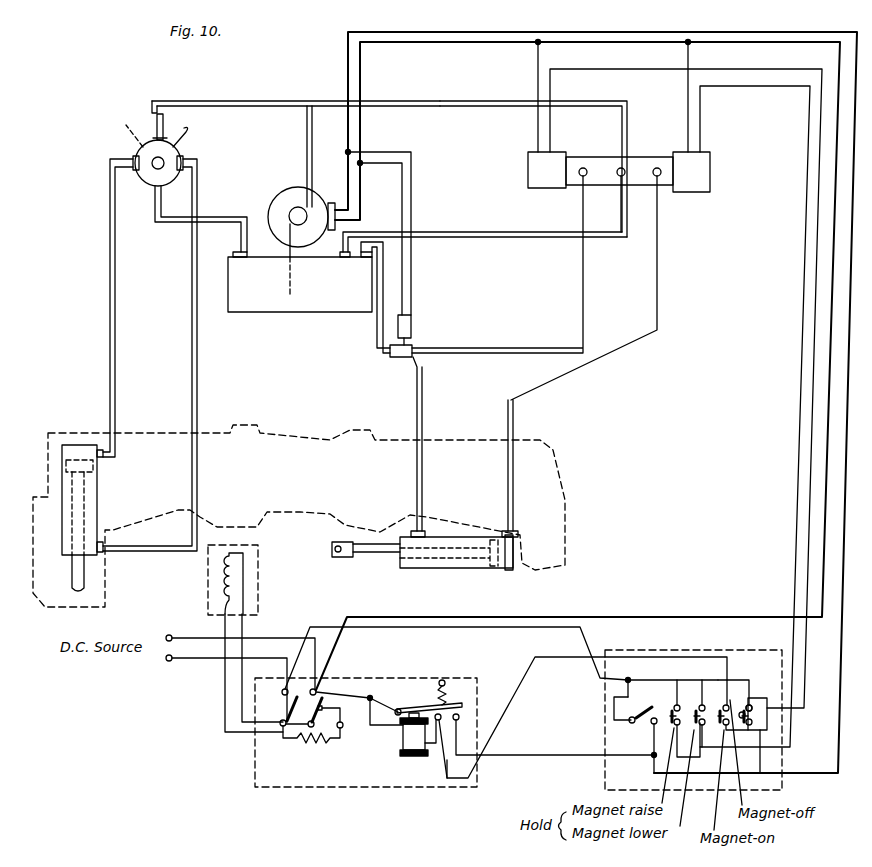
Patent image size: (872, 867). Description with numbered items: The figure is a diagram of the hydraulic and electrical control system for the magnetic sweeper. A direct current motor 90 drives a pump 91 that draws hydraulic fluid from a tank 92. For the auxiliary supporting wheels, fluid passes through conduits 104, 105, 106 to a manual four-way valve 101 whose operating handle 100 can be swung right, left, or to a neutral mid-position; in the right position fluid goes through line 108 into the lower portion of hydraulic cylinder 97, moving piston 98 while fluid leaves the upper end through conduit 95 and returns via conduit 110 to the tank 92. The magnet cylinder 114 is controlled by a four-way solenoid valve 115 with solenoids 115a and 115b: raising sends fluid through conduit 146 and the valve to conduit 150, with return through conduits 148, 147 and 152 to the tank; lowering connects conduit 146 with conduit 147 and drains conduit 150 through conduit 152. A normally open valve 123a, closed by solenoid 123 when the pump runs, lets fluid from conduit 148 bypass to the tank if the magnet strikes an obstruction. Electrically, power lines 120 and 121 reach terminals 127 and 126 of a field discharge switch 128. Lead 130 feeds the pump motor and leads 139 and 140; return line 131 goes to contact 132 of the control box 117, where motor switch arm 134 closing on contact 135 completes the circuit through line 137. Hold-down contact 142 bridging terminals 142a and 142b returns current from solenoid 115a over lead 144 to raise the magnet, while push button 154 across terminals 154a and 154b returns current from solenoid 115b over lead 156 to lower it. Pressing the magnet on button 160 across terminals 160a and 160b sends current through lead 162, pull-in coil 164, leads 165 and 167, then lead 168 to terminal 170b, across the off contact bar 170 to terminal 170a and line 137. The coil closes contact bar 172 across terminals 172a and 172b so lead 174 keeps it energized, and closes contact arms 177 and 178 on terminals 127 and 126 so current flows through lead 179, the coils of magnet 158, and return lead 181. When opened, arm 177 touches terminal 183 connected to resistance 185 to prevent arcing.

The direct current motor 90 is at (282, 191).
The pump 91 is at (288, 227).
The tank 92 is at (345, 302).
The conduit 95 is at (110, 333).
The hydraulic cylinder 97 is at (98, 498).
The piston 98 is at (77, 453).
The operating handle 100 is at (190, 131).
The 4-way valve 101 is at (153, 175).
The conduit 104 is at (307, 147).
The conduit 105 is at (247, 101).
The conduit 106 is at (151, 105).
The line 108 is at (192, 265).
The conduit 110 is at (185, 222).
The hydraulic cylinder 114 is at (416, 569).
The 4-way solenoid valve 115 is at (698, 168).
The solenoid 115a is at (528, 172).
The solenoid 115b is at (693, 205).
The control box 117 is at (612, 696).
The direct current power line 120 is at (188, 633).
The direct current power line 121 is at (202, 662).
The solenoid 123 is at (413, 318).
The valve 123a is at (411, 299).
The terminal 126 is at (273, 691).
The terminal 127 is at (317, 688).
The field discharge switch 128 is at (251, 759).
The lead 130 is at (362, 135).
The return line 131 is at (347, 132).
The motor switch contact 132 is at (648, 728).
The motor switch arm 134 is at (583, 732).
The contact 135 is at (629, 722).
The line 137 is at (489, 632).
The lead 139 is at (686, 128).
The lead 140 is at (537, 128).
The hold-down contact 142 is at (693, 720).
The terminal 142a is at (676, 705).
The terminal 142b is at (690, 712).
The return lead 144 is at (551, 128).
The conduit 146 is at (477, 100).
The conduit 147 is at (580, 214).
The conduit 148 is at (415, 495).
The conduit 150 is at (655, 336).
The conduit 152 is at (478, 232).
The push button 154 is at (702, 705).
The terminal 154a is at (725, 672).
The terminal 154b is at (704, 735).
The lead 156 is at (702, 131).
The magnet 158 is at (218, 573).
The magnet on button 160 is at (727, 705).
The terminal 160a is at (750, 704).
The terminal 160b is at (750, 702).
The lead 162 is at (372, 697).
The pull-in coil 164 is at (400, 736).
The lead 165 is at (430, 752).
The lead 167 is at (458, 779).
The lead 168 is at (762, 746).
The magnet off contact bar 170 is at (768, 716).
The terminal 170a is at (770, 707).
The terminal 170b is at (770, 723).
The contact bar 172 is at (420, 706).
The terminal 172a is at (441, 714).
The terminal 172b is at (459, 716).
The lead 174 is at (567, 747).
The contact arm 177 is at (304, 712).
The contact arm 178 is at (288, 709).
The lead 179 is at (225, 712).
The return lead 181 is at (242, 688).
The terminal 183 is at (323, 708).
The resistance 185 is at (296, 747).